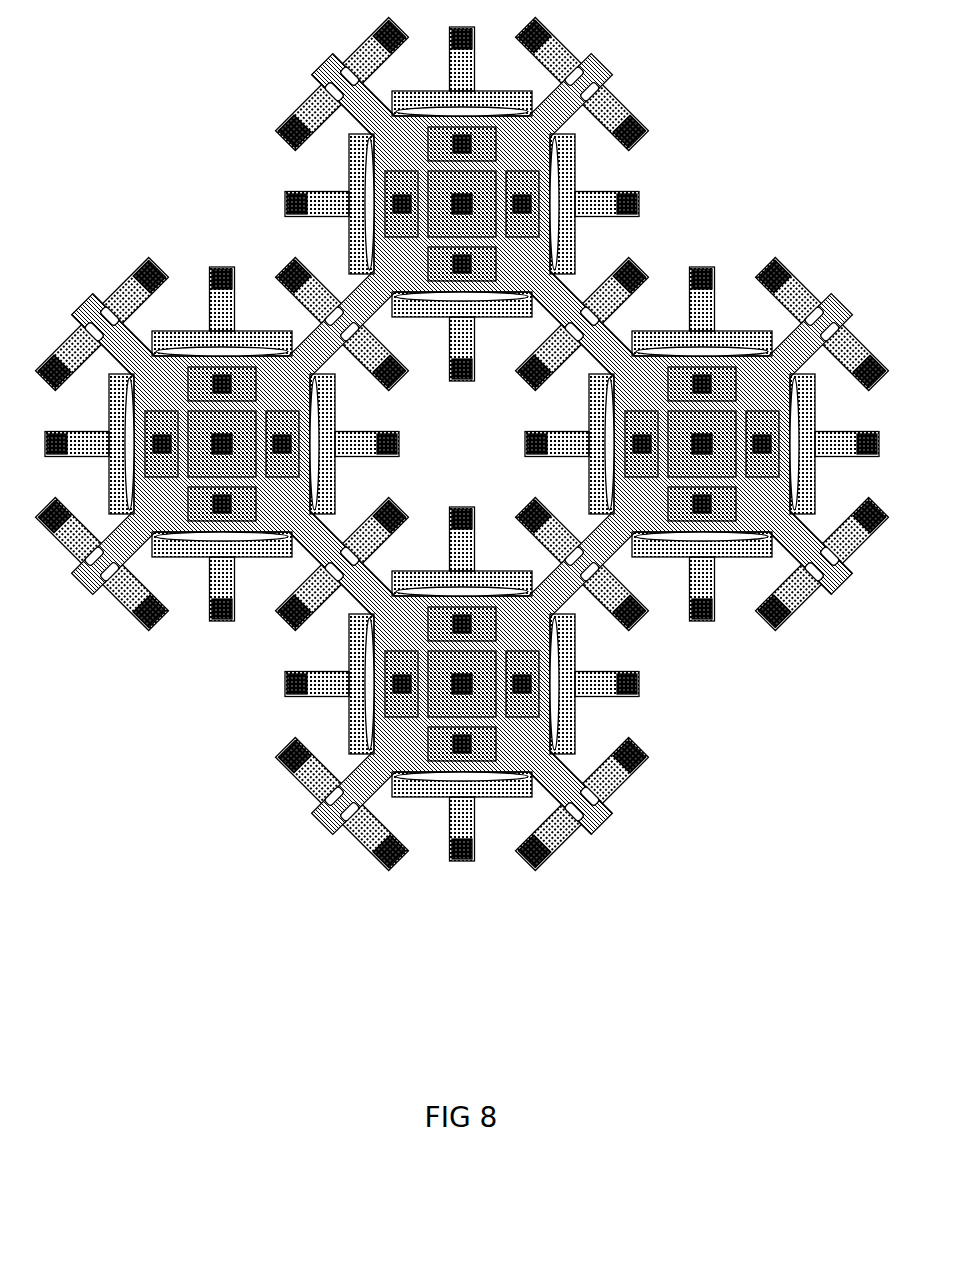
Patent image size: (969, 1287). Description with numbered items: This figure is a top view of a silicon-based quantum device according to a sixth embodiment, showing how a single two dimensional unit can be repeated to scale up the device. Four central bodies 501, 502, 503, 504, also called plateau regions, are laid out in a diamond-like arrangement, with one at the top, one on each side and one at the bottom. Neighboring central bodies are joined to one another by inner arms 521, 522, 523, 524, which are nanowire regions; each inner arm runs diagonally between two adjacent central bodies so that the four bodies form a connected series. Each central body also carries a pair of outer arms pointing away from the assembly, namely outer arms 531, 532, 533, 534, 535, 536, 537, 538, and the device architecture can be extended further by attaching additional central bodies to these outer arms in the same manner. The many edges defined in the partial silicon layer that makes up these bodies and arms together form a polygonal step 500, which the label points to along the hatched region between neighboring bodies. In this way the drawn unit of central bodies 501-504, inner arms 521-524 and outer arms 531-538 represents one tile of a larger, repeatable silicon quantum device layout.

The polygonal step 500 is at (481, 470).
The central body 501 is at (528, 150).
The central body 502 is at (635, 383).
The central body 503 is at (522, 625).
The central body 504 is at (158, 387).
The inner arm 521 is at (331, 352).
The inner arm 522 is at (597, 348).
The inner arm 523 is at (593, 540).
The inner arm 524 is at (368, 587).
The outer arm 531 is at (325, 73).
The outer arm 532 is at (598, 73).
The outer arm 533 is at (830, 302).
The outer arm 534 is at (833, 585).
The outer arm 535 is at (595, 823).
The outer arm 536 is at (320, 820).
The outer arm 537 is at (90, 580).
The outer arm 538 is at (83, 303).